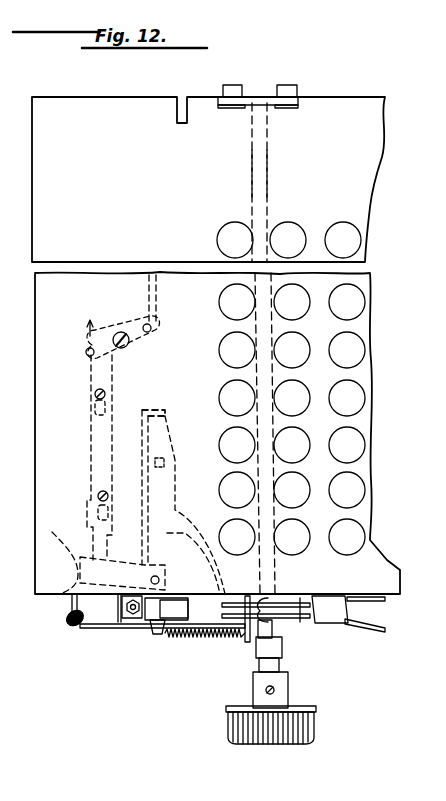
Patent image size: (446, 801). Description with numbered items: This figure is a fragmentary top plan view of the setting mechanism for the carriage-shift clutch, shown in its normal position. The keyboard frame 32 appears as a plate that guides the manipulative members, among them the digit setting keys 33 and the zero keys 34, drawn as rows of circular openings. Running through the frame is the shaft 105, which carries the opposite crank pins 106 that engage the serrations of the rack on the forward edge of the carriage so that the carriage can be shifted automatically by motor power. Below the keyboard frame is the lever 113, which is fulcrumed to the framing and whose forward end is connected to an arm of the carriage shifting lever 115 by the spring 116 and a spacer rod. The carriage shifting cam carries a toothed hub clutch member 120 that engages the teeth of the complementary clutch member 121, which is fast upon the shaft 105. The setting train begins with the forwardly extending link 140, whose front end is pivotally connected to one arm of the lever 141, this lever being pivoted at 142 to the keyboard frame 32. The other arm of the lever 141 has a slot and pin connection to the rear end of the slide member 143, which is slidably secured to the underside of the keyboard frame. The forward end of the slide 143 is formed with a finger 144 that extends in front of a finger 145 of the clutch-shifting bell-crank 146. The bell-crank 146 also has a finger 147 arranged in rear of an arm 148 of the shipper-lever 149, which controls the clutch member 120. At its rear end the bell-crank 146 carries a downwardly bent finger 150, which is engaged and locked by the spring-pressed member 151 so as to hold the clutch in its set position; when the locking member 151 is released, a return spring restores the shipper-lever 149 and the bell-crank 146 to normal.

The keyboard frame 32 is at (208, 179).
The digit setting keys 33 is at (228, 238).
The zero keys 34 is at (355, 547).
The shaft 105 is at (264, 186).
The crank pins 106 is at (288, 86).
The lever 113 is at (68, 614).
The carriage shifting lever 115 is at (125, 630).
The spring 116 is at (72, 628).
The toothed hub clutch member 120 is at (282, 630).
The complementary clutch member 121 is at (258, 648).
The link 140 is at (158, 313).
The lever 141 is at (120, 352).
The pivot 142 is at (120, 331).
The slide member 143 is at (90, 380).
The finger 144 is at (62, 598).
The finger 145 is at (59, 552).
The clutch-shifting bell-crank 146 is at (162, 505).
The finger 147 is at (222, 572).
The arm 148 is at (193, 632).
The shipper-lever 149 is at (332, 612).
The downwardly bent finger 150 is at (160, 410).
The spring-pressed locking member 151 is at (172, 438).